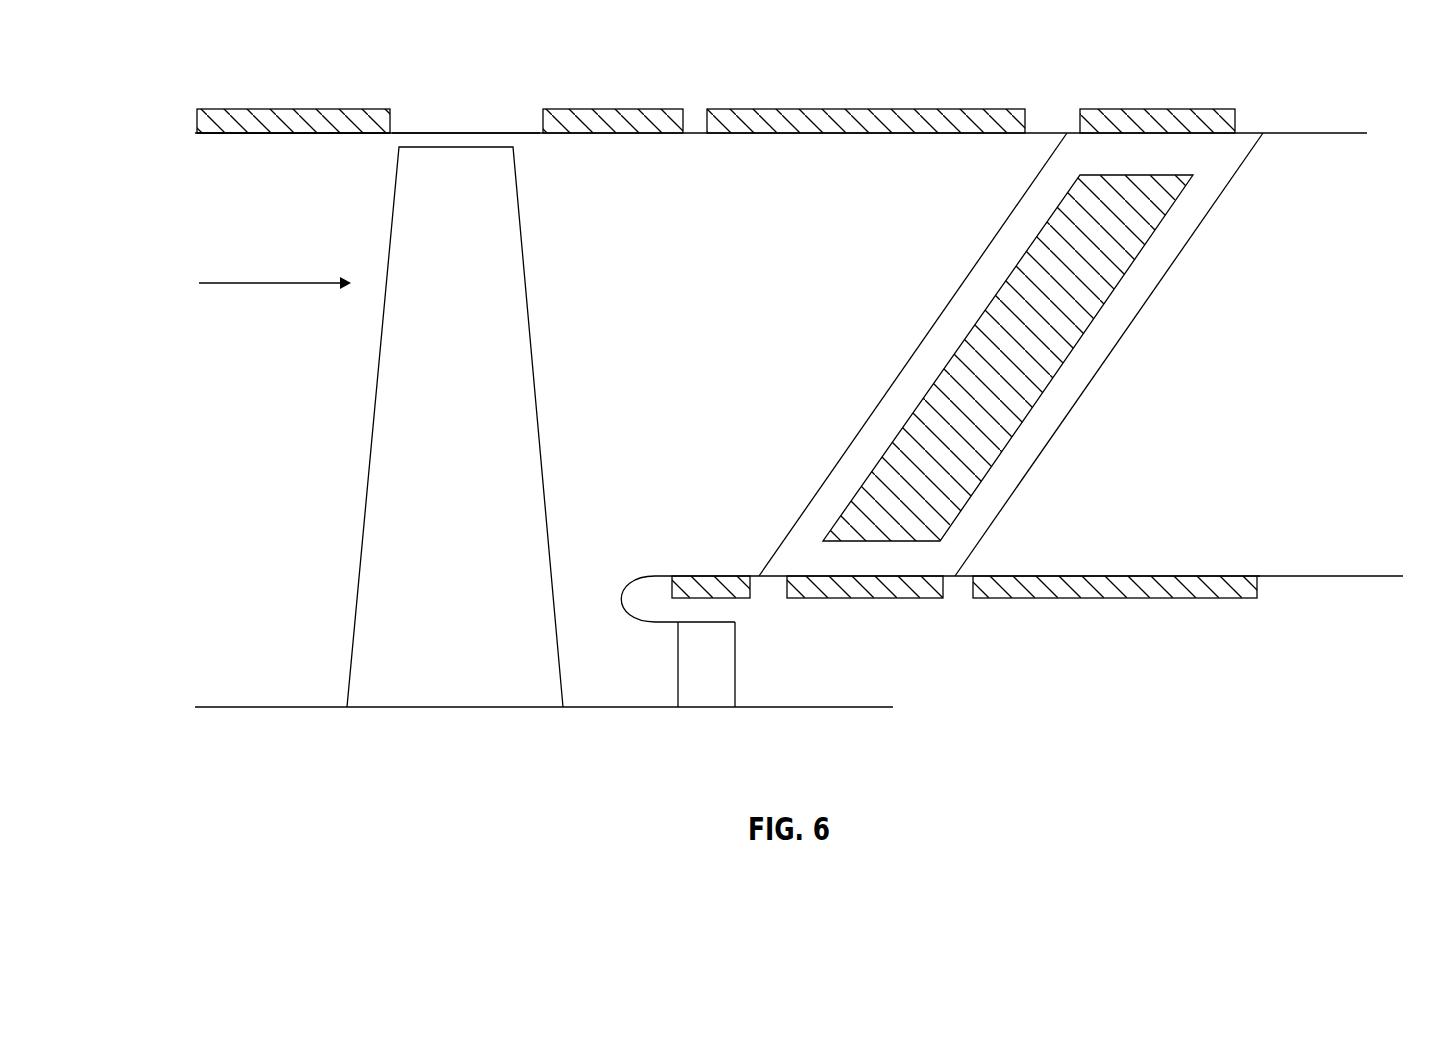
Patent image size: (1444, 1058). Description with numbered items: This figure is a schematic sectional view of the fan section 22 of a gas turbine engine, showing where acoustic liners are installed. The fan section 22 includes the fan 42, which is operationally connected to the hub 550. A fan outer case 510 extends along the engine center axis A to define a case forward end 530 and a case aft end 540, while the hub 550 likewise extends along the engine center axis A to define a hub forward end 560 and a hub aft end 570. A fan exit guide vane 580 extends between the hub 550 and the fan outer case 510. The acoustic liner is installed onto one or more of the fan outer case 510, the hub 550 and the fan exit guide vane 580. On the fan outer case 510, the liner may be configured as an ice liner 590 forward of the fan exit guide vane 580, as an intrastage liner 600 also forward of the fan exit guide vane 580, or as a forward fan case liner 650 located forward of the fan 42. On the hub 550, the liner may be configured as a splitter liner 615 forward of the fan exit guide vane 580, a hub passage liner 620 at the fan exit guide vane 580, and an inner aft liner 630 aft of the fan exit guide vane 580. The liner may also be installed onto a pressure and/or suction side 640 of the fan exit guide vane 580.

The fan section 22 is at (142, 90).
The fan 42 is at (470, 560).
The engine center axis A is at (235, 707).
The fan outer case 510 is at (440, 133).
The case forward end 530 is at (282, 133).
The case aft end 540 is at (1322, 133).
The hub 550 is at (1157, 576).
The hub forward end 560 is at (707, 576).
The hub aft end 570 is at (1372, 576).
The fan exit guide vane 580 is at (1010, 215).
The ice liner 590 is at (612, 109).
The intrastage liner 600 is at (868, 109).
The splitter liner 615 is at (727, 598).
The hub passage liner 620 is at (865, 598).
The inner aft liner 630 is at (1115, 598).
The pressure and/or suction side 640 is at (965, 398).
The forward fan case liner 650 is at (293, 109).